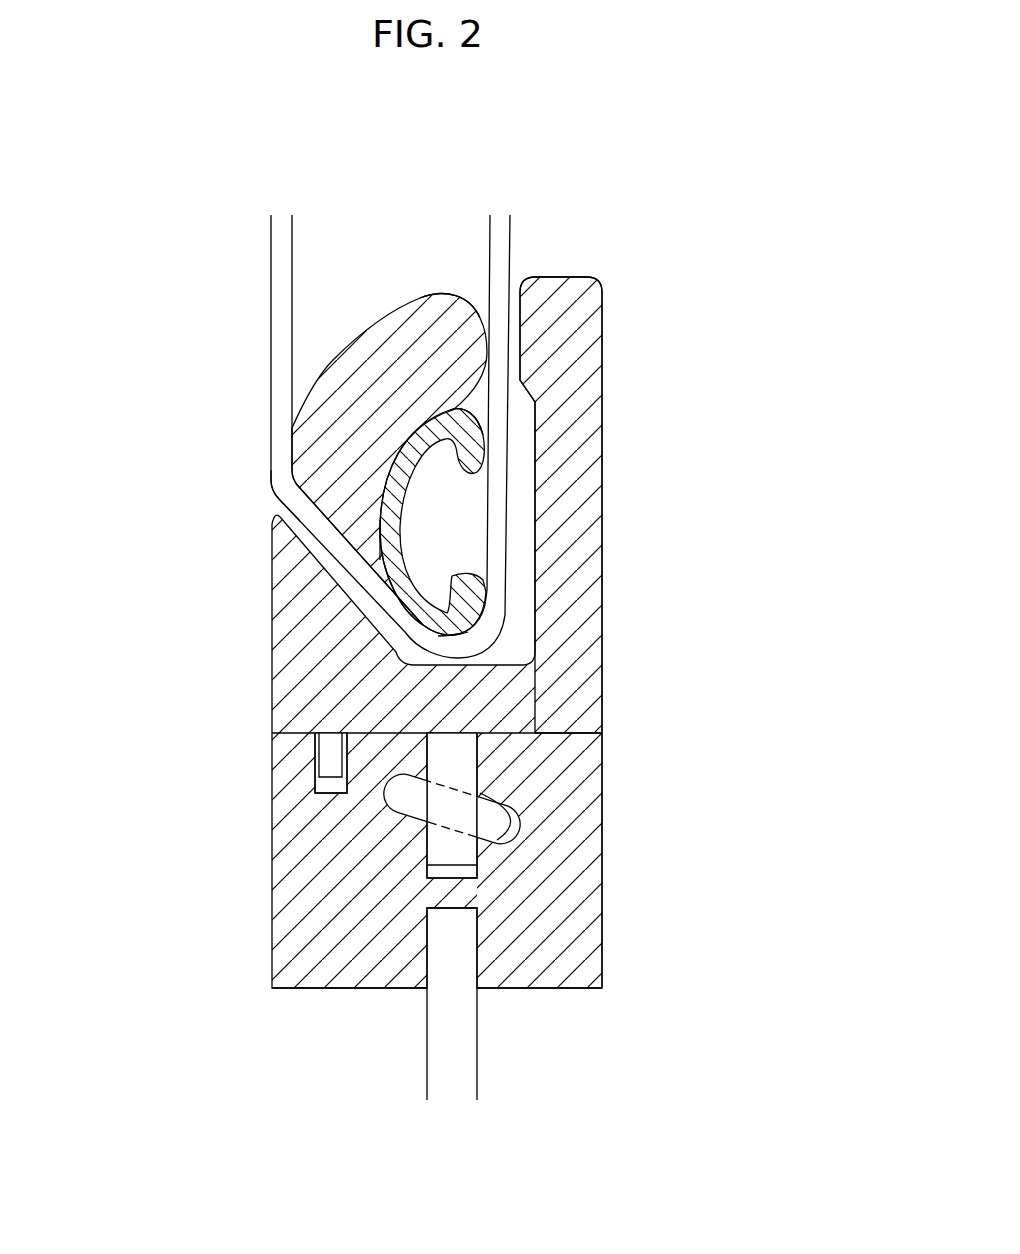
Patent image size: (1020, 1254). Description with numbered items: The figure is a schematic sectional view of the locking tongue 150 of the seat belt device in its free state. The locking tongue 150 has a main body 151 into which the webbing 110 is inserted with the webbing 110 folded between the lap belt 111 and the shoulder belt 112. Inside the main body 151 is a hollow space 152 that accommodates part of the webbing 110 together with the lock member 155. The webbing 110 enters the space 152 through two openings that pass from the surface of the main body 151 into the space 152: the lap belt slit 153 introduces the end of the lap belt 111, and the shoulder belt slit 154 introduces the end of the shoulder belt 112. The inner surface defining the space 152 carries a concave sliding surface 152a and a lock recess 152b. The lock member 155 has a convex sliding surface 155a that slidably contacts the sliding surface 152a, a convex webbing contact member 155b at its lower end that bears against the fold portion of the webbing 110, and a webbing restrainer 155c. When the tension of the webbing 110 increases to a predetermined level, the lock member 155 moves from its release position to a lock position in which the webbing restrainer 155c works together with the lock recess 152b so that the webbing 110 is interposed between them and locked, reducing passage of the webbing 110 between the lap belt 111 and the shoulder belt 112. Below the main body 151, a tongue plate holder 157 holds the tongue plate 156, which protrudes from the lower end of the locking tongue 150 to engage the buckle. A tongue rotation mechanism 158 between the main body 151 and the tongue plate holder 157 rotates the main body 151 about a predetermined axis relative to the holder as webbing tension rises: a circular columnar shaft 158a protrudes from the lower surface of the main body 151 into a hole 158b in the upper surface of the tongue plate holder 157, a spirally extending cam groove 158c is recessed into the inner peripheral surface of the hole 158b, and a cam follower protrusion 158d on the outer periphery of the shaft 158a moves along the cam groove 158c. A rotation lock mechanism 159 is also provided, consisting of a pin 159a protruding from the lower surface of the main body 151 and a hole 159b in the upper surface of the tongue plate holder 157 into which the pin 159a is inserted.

The locking tongue 150 is at (235, 210).
The webbing 110 is at (250, 265).
The lap belt 111 is at (271, 318).
The shoulder belt 112 is at (509, 262).
The main body 151 is at (602, 318).
The space 152 is at (525, 545).
The sliding surface 152a is at (407, 438).
The lock recess 152b is at (535, 402).
The lap belt slit 153 is at (275, 510).
The shoulder belt slit 154 is at (473, 284).
The lock member 155 is at (400, 527).
The sliding surface 155a is at (380, 540).
The webbing contact member 155b is at (452, 634).
The webbing restrainer 155c is at (467, 413).
The tongue plate 156 is at (427, 1065).
The tongue plate holder 157 is at (602, 960).
The tongue rotation mechanism 158 is at (510, 764).
The shaft 158a is at (470, 781).
The hole 158b is at (475, 875).
The cam groove 158c is at (518, 822).
The cam follower protrusion 158d is at (493, 830).
The rotation lock mechanism 159 is at (302, 752).
The pin 159a is at (325, 760).
The hole 159b is at (315, 788).